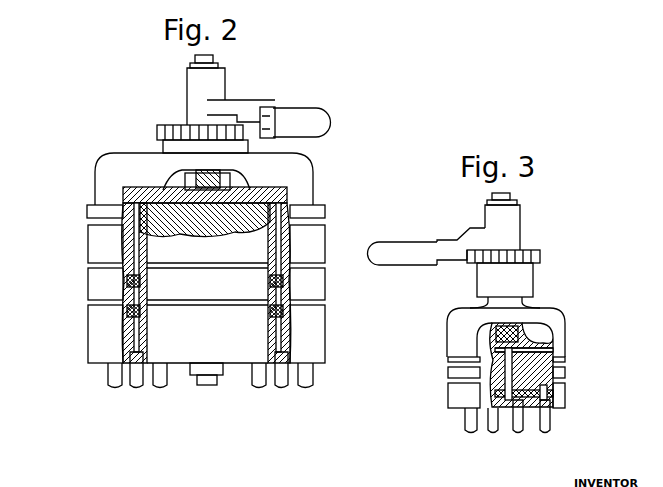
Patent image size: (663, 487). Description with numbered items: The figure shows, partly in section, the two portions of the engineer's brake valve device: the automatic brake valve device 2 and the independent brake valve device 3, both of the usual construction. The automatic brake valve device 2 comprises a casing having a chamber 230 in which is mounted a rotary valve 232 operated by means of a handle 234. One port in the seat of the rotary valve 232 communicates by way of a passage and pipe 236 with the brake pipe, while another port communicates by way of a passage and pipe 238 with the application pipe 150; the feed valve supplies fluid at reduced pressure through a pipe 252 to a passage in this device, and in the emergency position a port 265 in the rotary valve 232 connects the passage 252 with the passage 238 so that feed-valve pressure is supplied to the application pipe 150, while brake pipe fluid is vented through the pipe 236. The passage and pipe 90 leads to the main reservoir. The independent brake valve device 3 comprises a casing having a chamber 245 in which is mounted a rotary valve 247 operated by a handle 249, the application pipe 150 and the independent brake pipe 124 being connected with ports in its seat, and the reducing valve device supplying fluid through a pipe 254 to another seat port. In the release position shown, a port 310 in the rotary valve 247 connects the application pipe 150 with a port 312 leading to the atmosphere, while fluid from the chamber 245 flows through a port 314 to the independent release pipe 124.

In FIG. 2, the automatic brake valve device 2 is at (137, 149).
In FIG. 2, the chamber 230 is at (177, 182).
In FIG. 2, the rotary valve 232 is at (127, 200).
In FIG. 2, the pipe 252 is at (135, 245).
In FIG. 2, the passage and pipe 90 is at (106, 377).
In FIG. 2, the passage and pipe 236 is at (191, 399).
In FIG. 2, the passage and pipe 238 is at (288, 250).
In FIG. 2, the handle 234 is at (322, 131).
In FIG. 2, the port 265 is at (270, 192).
In FIG. 3, the independent brake valve device 3 is at (547, 306).
In FIG. 3, the handle 249 is at (432, 270).
In FIG. 3, the rotary valve 247 is at (488, 345).
In FIG. 3, the port 310 is at (495, 351).
In FIG. 3, the port 312 is at (495, 372).
In FIG. 3, the pipe 254 is at (466, 420).
In FIG. 3, the application pipe 150 is at (515, 424).
In FIG. 3, the independent brake pipe 124 is at (548, 430).
In FIG. 3, the chamber 245 is at (531, 336).
In FIG. 3, the port 314 is at (553, 345).